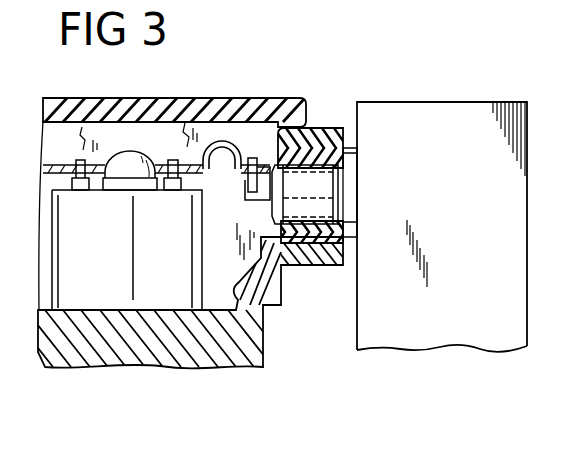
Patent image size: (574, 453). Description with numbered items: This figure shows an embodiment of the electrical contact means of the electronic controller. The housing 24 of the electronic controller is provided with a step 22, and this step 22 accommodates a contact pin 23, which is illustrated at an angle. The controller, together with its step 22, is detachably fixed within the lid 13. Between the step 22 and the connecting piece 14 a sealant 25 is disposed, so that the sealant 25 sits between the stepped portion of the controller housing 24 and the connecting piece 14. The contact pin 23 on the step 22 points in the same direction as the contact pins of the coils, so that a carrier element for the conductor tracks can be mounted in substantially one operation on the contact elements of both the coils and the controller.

The lid 13 is at (212, 107).
The connecting piece 14 is at (318, 267).
The step 22 is at (323, 178).
The contact pin 23 is at (271, 140).
The housing 24 is at (415, 328).
The sealant 25 is at (302, 267).